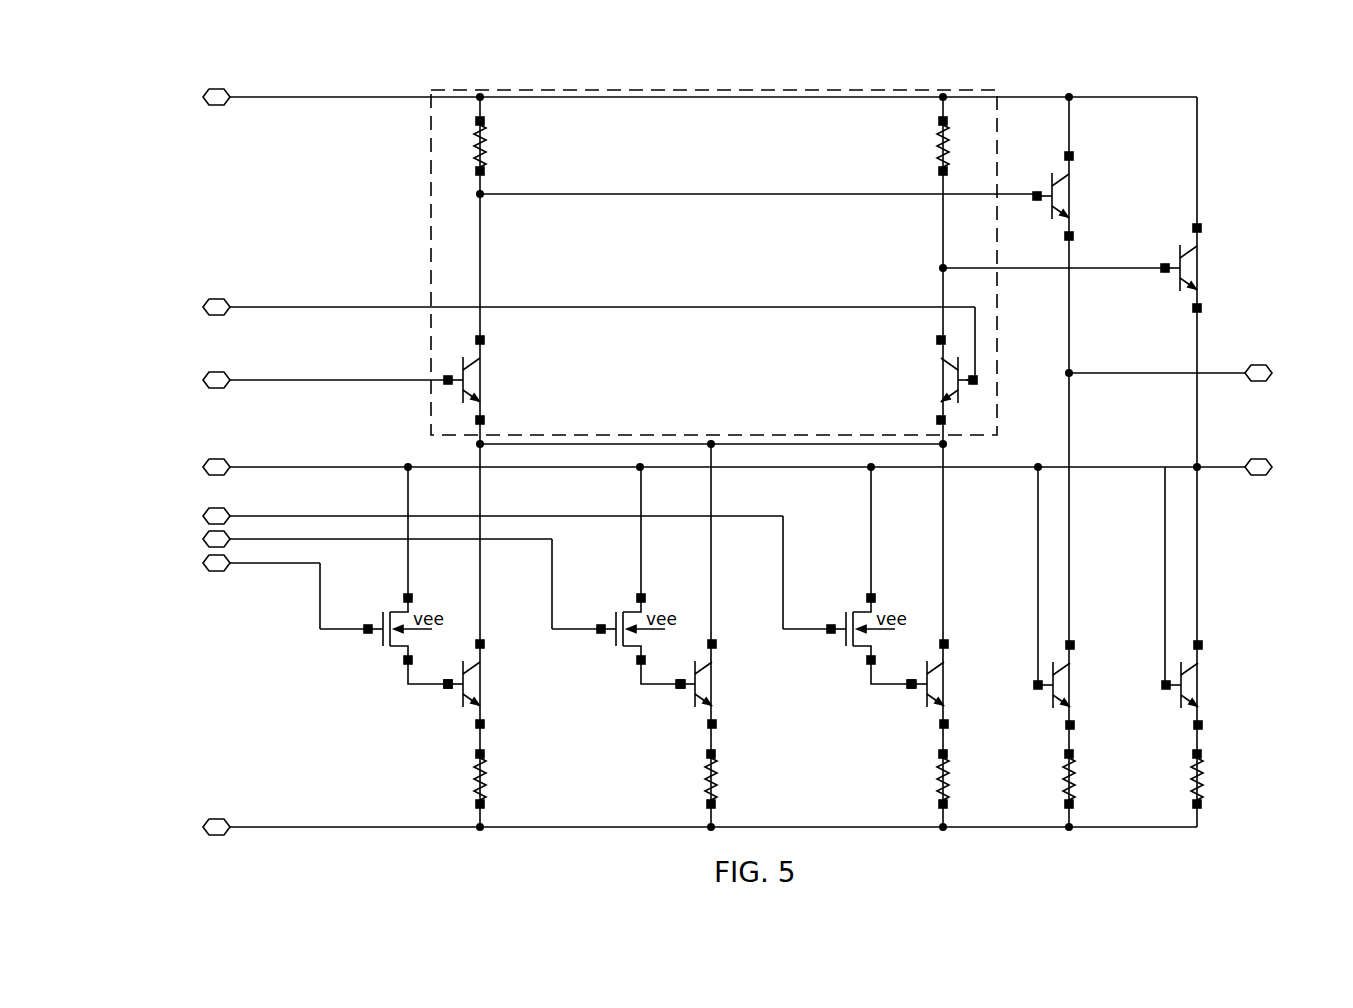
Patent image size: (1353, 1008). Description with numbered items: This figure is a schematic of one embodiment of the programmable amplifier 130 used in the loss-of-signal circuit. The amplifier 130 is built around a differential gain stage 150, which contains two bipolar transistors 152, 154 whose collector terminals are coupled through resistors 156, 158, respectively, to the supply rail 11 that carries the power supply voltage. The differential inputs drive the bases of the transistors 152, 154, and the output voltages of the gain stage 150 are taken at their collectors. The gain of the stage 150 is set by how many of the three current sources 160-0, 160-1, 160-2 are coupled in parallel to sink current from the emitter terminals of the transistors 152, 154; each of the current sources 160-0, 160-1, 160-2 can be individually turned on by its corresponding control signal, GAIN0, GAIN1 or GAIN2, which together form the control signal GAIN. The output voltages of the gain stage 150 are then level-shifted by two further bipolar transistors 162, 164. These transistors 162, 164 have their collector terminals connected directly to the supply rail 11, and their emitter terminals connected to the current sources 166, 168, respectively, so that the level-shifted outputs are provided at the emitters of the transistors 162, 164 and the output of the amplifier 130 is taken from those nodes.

The programmable amplifier 130 is at (226, 70).
The supply rail 11 is at (357, 97).
The differential gain stage 150 is at (432, 408).
The bipolar transistor 152 is at (490, 377).
The bipolar transistor 154 is at (928, 377).
The resistor 156 is at (497, 142).
The resistor 158 is at (918, 142).
The bipolar transistor 162 is at (1085, 188).
The bipolar transistor 164 is at (1210, 266).
The current source 160-0 is at (450, 728).
The current source 160-1 is at (683, 724).
The current source 160-2 is at (913, 725).
The current source 166 is at (1043, 728).
The current source 168 is at (1171, 728).